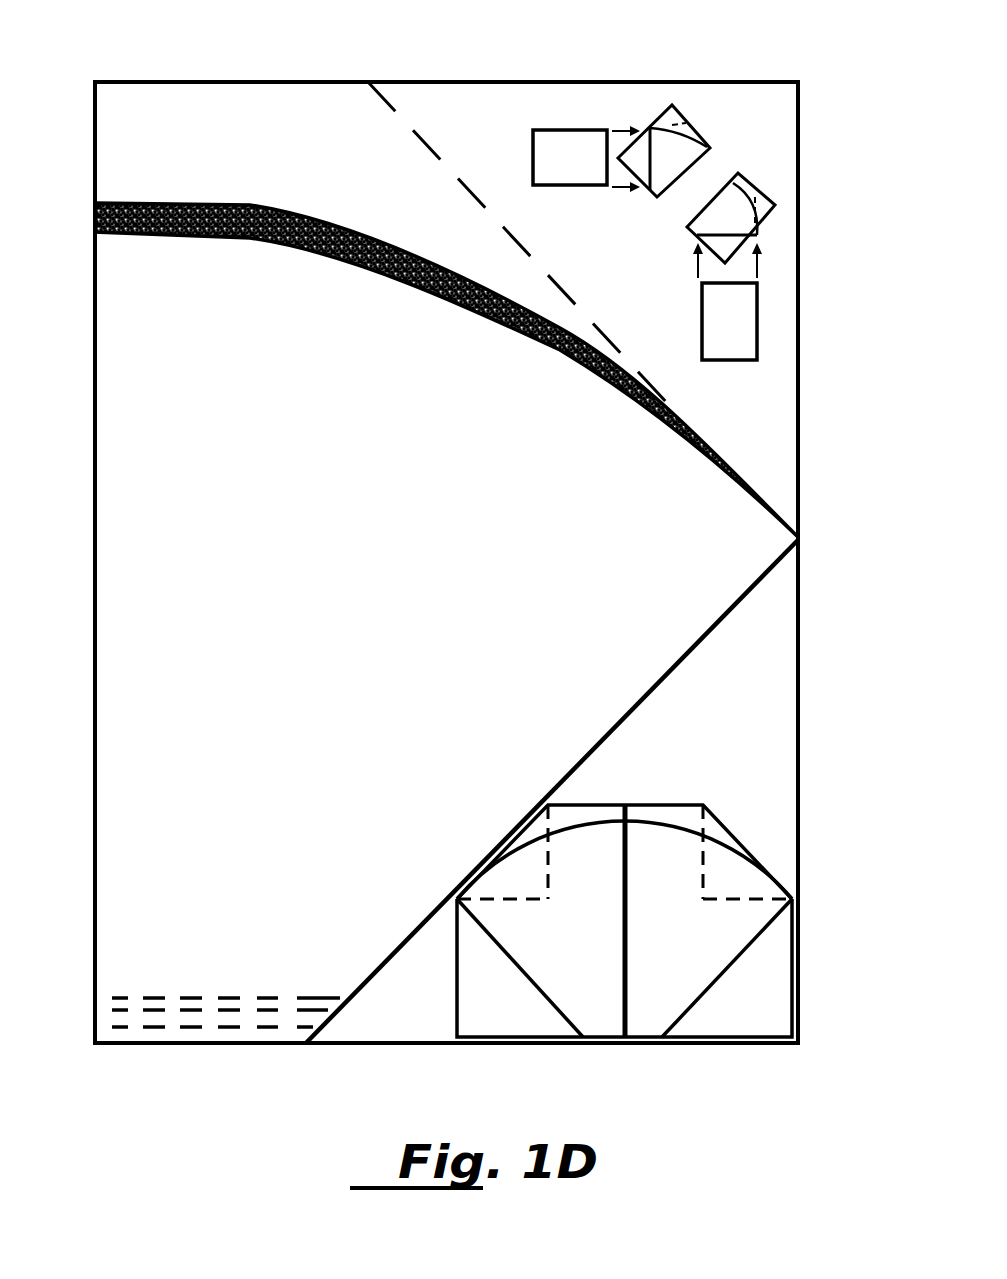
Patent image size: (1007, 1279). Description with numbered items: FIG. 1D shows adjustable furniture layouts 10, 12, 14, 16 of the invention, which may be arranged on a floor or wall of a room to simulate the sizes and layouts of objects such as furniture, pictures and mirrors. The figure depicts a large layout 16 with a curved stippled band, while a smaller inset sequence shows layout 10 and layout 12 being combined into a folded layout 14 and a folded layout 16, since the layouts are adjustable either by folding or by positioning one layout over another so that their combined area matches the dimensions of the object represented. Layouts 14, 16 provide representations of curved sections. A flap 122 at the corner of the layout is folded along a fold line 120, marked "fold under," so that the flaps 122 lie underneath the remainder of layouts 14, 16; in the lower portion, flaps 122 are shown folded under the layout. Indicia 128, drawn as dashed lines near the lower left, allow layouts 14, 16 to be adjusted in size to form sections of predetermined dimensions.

The adjustable layout 10 is at (570, 135).
The adjustable layout 12 is at (757, 330).
The adjustable layout 14 is at (657, 118).
The adjustable layout 16 is at (243, 70).
The fold line 120 is at (432, 147).
The flap 122 is at (763, 83).
The indicia 128 is at (223, 997).